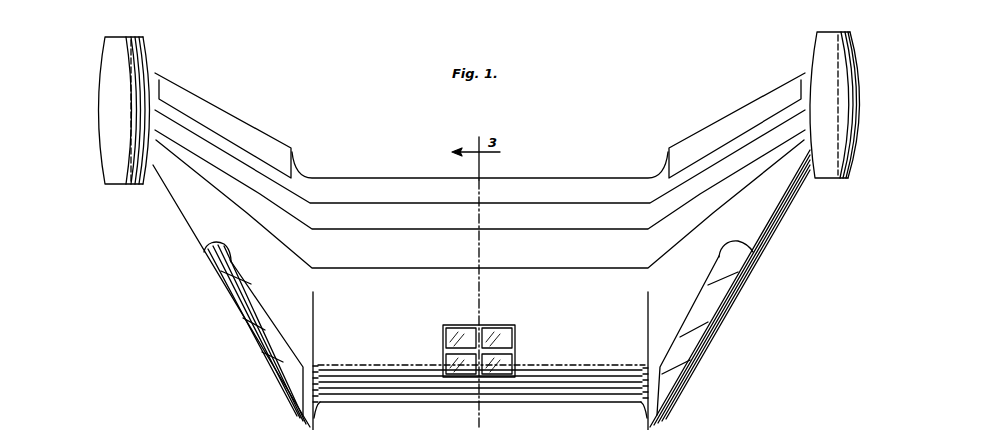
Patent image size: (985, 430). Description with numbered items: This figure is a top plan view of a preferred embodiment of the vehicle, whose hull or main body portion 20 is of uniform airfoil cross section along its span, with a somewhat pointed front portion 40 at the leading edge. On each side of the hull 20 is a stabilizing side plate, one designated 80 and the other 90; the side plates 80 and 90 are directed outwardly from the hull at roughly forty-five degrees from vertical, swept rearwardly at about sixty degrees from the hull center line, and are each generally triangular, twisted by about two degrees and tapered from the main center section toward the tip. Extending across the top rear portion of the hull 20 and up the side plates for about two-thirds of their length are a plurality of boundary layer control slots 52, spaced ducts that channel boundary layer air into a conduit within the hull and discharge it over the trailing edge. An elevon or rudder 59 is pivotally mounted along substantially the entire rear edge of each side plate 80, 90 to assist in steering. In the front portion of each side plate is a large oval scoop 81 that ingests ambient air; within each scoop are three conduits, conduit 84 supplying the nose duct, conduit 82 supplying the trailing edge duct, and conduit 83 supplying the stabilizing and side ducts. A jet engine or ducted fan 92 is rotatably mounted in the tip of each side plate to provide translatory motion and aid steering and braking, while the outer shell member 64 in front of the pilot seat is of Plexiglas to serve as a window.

The hull portion 20 is at (559, 180).
The front portion 40 is at (552, 401).
The boundary layer control slots 52 is at (403, 204).
The elevon 59 is at (223, 122).
The outer shell member 64 is at (504, 341).
The stabilizing side plate 80 is at (186, 230).
The scoop 81 is at (258, 352).
The conduit 82 is at (220, 280).
The conduit 83 is at (255, 331).
The conduit 84 is at (281, 378).
The stabilizing side plate 90 is at (779, 216).
The jet engine or ducted fan 92 is at (106, 92).